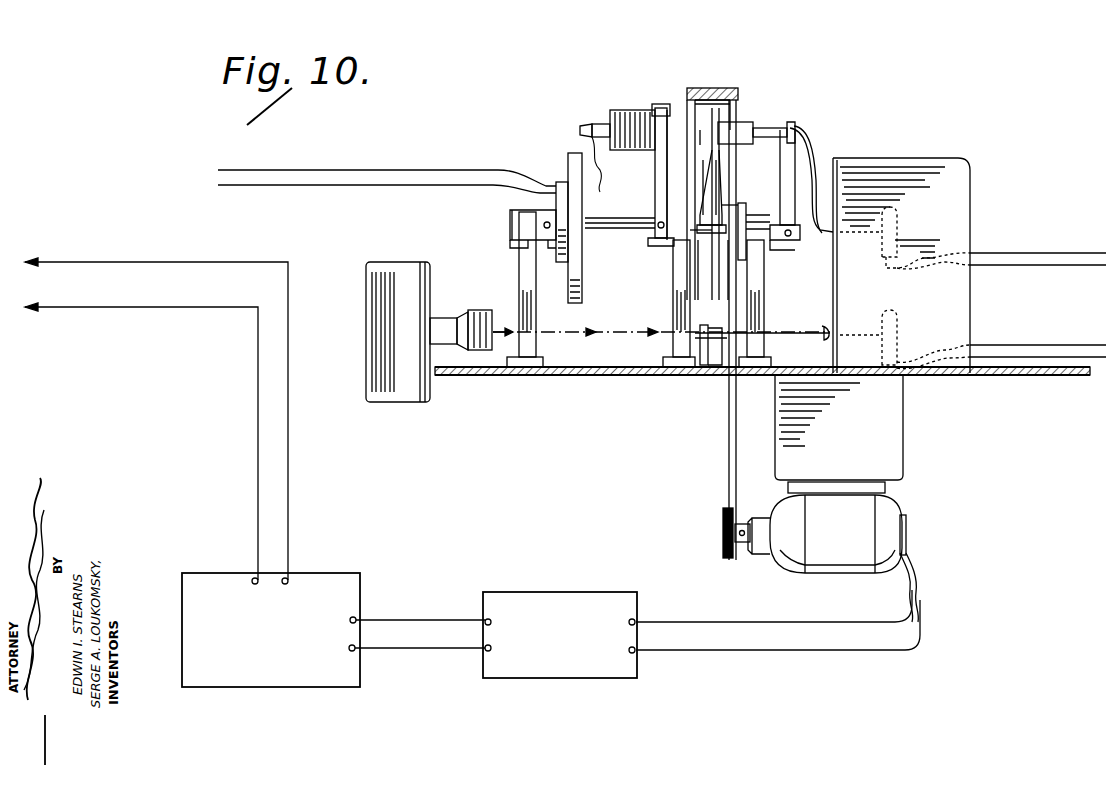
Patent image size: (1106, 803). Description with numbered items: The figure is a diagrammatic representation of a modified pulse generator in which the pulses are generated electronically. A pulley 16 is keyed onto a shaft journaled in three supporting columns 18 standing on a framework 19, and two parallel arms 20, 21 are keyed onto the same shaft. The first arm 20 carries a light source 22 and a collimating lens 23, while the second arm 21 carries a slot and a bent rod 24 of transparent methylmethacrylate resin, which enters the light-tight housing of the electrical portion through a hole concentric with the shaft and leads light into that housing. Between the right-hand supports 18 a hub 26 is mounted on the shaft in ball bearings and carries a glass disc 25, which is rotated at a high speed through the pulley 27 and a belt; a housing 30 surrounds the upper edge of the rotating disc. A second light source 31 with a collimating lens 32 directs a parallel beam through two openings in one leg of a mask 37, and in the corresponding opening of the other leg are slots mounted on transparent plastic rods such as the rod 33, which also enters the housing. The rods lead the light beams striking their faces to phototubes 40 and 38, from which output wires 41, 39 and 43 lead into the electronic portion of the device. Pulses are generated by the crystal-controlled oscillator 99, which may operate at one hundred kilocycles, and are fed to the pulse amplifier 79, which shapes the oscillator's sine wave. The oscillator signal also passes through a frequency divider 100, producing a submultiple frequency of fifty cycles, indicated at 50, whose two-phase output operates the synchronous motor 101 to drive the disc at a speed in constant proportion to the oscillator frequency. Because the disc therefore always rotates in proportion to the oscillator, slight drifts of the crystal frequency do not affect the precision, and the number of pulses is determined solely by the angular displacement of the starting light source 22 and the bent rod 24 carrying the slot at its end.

The pulley 16 is at (582, 302).
The supporting columns 18 is at (536, 316).
The framework 19 is at (605, 376).
The arm 20 is at (655, 186).
The arm 21 is at (780, 186).
The light source 22 is at (621, 110).
The collimating lens 23 is at (668, 108).
The bent rod 24 is at (806, 150).
The glass disc 25 is at (735, 122).
The hub 26 is at (700, 240).
The pulley 27 is at (740, 245).
The housing 30 is at (720, 88).
The second light source 31 is at (430, 275).
The collimating lens 32 is at (476, 310).
The plastic rod 33 is at (816, 336).
The mask 37 is at (700, 335).
The phototube 38 is at (897, 325).
The output wires 39 is at (1054, 356).
The phototube 40 is at (897, 222).
The output wires 41 is at (1070, 266).
The output wires 43 is at (258, 455).
The 50 cycle supply 50 is at (718, 636).
The pulse amplifier 79 is at (135, 287).
The crystal-controlled oscillator 99 is at (357, 573).
The frequency divider 100 is at (563, 591).
The two-phase synchronous motor 101 is at (908, 525).